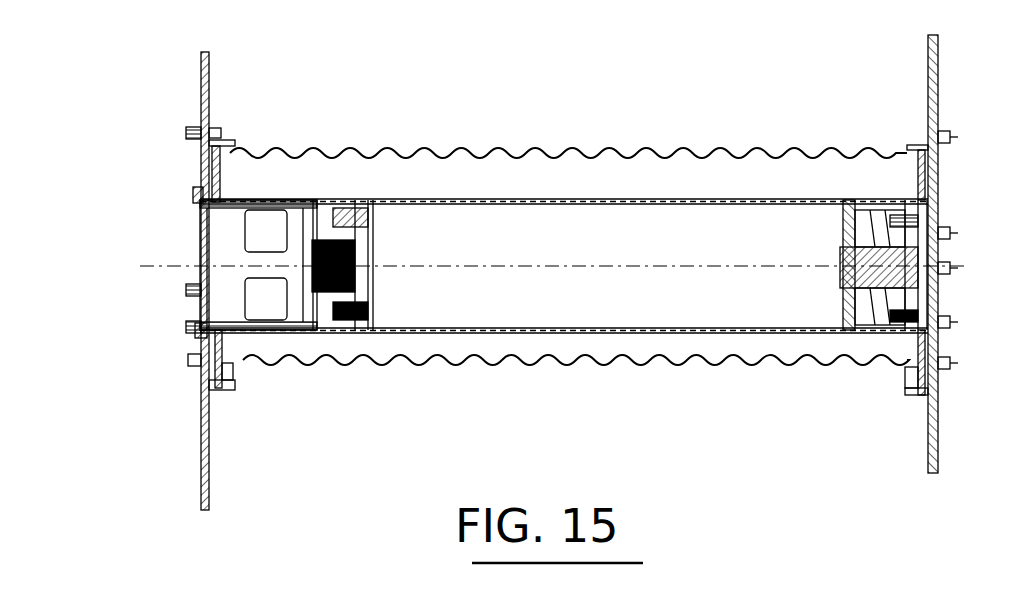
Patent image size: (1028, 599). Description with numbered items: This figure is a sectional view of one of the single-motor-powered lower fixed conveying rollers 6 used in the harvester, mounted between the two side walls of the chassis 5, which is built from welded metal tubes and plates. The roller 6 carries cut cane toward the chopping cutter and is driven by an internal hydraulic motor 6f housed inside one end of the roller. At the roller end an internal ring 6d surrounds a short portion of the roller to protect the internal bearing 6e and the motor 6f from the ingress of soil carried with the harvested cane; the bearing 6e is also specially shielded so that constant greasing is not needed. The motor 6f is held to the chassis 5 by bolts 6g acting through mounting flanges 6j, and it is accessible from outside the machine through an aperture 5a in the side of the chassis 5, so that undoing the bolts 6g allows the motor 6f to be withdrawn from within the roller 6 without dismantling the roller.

The chassis 5 is at (203, 93).
The aperture 5a is at (218, 197).
The conveying roller 6 is at (527, 187).
The internal ring 6d is at (233, 373).
The internal bearing 6e is at (845, 235).
The motor 6f is at (233, 245).
The bolts 6g is at (182, 290).
The mounting flanges 6j is at (193, 193).